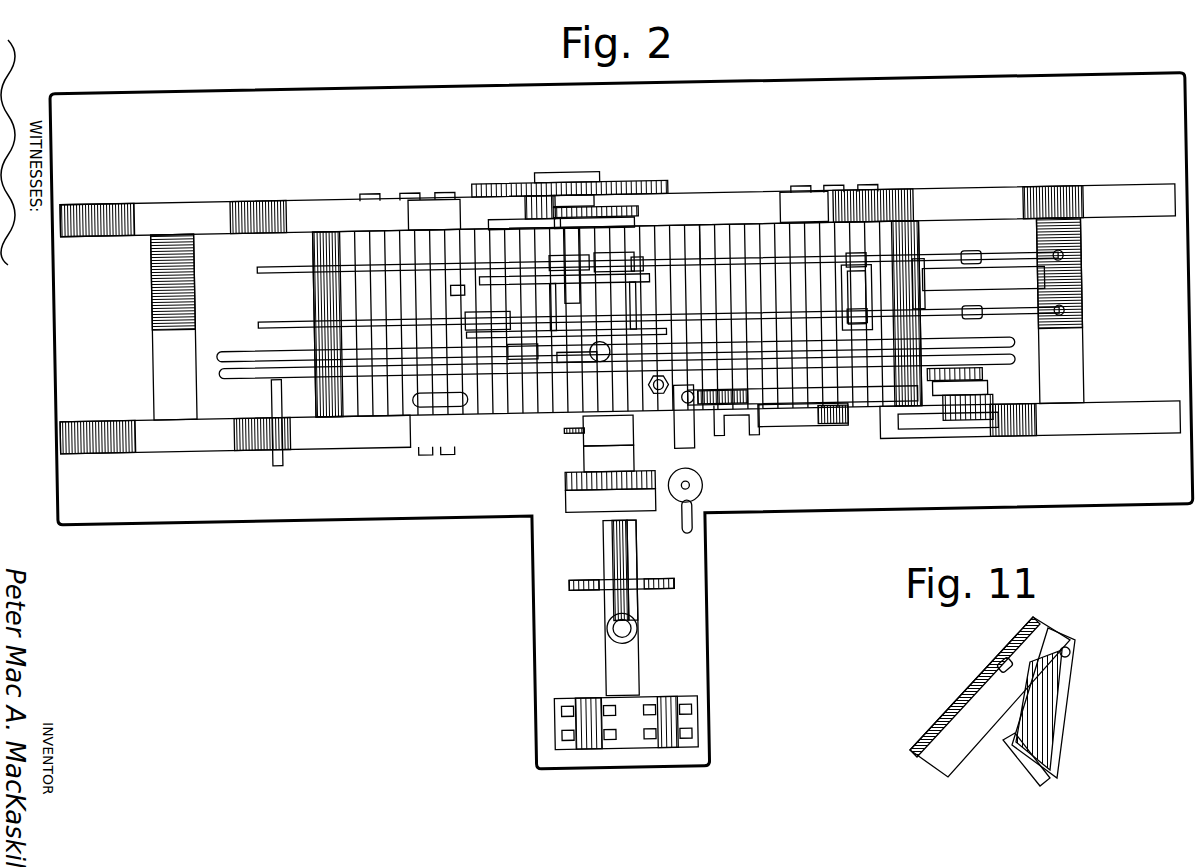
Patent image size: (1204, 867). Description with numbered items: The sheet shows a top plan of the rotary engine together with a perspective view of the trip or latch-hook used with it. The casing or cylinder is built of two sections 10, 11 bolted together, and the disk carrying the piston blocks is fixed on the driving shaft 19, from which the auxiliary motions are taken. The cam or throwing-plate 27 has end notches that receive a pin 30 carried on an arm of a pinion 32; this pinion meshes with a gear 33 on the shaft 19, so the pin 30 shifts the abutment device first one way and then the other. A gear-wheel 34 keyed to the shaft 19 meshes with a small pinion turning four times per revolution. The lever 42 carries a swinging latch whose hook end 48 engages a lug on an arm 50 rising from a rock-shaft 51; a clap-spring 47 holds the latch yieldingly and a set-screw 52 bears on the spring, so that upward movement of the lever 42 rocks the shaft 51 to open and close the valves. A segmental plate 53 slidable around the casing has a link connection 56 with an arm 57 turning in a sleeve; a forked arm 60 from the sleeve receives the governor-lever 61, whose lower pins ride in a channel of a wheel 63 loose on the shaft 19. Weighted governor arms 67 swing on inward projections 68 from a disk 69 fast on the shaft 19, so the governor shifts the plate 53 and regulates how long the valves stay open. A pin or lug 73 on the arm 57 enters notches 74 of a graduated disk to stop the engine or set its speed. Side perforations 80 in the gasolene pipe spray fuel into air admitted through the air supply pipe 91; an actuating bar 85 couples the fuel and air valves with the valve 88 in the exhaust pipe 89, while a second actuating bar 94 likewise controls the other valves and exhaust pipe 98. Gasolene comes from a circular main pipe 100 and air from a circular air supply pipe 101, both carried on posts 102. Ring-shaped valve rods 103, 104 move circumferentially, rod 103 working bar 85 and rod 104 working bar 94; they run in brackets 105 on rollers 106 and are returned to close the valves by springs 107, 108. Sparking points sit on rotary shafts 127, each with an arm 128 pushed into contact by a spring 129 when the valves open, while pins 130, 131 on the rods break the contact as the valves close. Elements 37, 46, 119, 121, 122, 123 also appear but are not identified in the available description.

In FIG. 2, the casing section 10 is at (535, 420).
In FIG. 2, the casing section 11 is at (758, 226).
In FIG. 2, the driving shaft 19 is at (636, 668).
In FIG. 2, the throwing-plate 27 is at (650, 192).
In FIG. 2, the pin 30 is at (541, 183).
In FIG. 2, the pinion 32 is at (600, 205).
In FIG. 2, the gear 33 is at (646, 222).
In FIG. 2, the gear-wheel 34 is at (586, 431).
In FIG. 2, the arm 37 is at (698, 455).
In FIG. 2, the lever 42 is at (965, 445).
In FIG. 2, the block 46 is at (990, 406).
In FIG. 2, the clap-spring 47 is at (1000, 422).
In FIG. 11, the hook end 48 is at (1024, 760).
In FIG. 2, the arm 50 is at (985, 390).
In FIG. 2, the rock-shaft 51 is at (935, 325).
In FIG. 11, the set-screw 52 is at (997, 668).
In FIG. 2, the segmental plate 53 is at (785, 440).
In FIG. 2, the link connection 56 is at (732, 402).
In FIG. 2, the arm 57 is at (740, 448).
In FIG. 2, the forked arm 60 is at (585, 470).
In FIG. 2, the governor-lever 61 is at (566, 508).
In FIG. 2, the wheel 63 is at (566, 489).
In FIG. 2, the weighted governor arms 67 is at (636, 574).
In FIG. 2, the inward projections 68 is at (603, 558).
In FIG. 2, the disk 69 is at (673, 593).
In FIG. 2, the pin or lug 73 is at (694, 530).
In FIG. 2, the notches 74 is at (704, 499).
In FIG. 2, the side perforations 80 is at (592, 340).
In FIG. 2, the actuating bar 85 is at (564, 303).
In FIG. 2, the valve 88 is at (607, 372).
In FIG. 2, the exhaust pipe 89 is at (432, 462).
In FIG. 2, the air supply pipe 91 is at (530, 368).
In FIG. 2, the actuating bar 94 is at (580, 372).
In FIG. 2, the exhaust pipe 98 is at (652, 400).
In FIG. 2, the main pipe 100 is at (290, 355).
In FIG. 2, the air supply pipe 101 is at (262, 383).
In FIG. 2, the posts 102 is at (472, 407).
In FIG. 2, the valve rod 103 is at (725, 265).
In FIG. 2, the valve rod 104 is at (762, 326).
In FIG. 2, the brackets 105 is at (846, 308).
In FIG. 2, the rollers 106 is at (858, 268).
In FIG. 2, the spring 107 is at (985, 268).
In FIG. 2, the spring 108 is at (990, 333).
In FIG. 2, the block 119 is at (641, 268).
In FIG. 2, the block 121 is at (619, 263).
In FIG. 2, the block 122 is at (468, 320).
In FIG. 2, the carriage 123 is at (492, 320).
In FIG. 2, the rotary shafts 127 is at (572, 280).
In FIG. 2, the arm 128 is at (515, 228).
In FIG. 2, the springs 129 is at (540, 238).
In FIG. 2, the pin 130 is at (503, 237).
In FIG. 2, the pin 131 is at (576, 282).